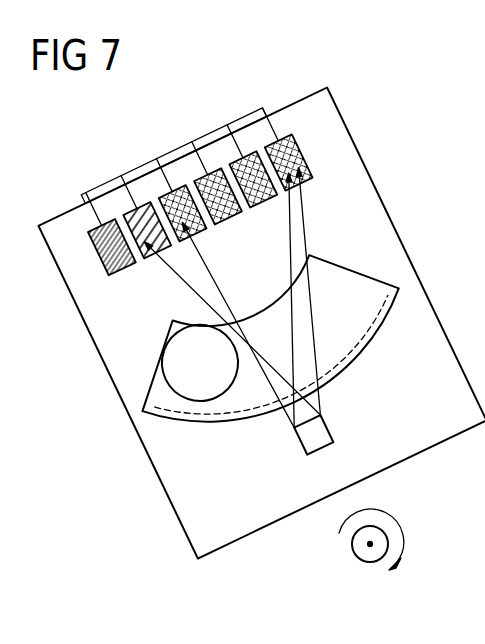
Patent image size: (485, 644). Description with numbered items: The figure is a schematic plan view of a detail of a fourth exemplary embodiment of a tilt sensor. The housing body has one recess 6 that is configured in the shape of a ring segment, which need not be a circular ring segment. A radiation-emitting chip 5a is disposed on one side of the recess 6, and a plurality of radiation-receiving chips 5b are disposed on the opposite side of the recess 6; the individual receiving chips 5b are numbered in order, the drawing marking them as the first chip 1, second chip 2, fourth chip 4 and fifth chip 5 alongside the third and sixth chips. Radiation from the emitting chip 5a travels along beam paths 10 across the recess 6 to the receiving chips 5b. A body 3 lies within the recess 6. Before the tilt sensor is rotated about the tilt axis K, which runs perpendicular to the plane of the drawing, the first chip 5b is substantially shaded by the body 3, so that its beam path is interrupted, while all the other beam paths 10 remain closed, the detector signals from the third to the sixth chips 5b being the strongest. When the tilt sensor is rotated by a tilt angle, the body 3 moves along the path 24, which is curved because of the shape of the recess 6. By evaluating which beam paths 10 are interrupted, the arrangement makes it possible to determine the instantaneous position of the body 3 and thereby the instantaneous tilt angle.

The radiation-receiving chip 5b is at (173, 150).
The radiation-emitting chip 5a is at (330, 432).
The beam path 10 is at (203, 298).
The recess 6 is at (385, 343).
The path 24 is at (353, 345).
The detector 1 is at (114, 262).
The detector 2 is at (148, 247).
The body 3 is at (190, 229).
The detector 4 is at (221, 212).
The detector 5 is at (256, 197).
The tilt axis K is at (352, 544).